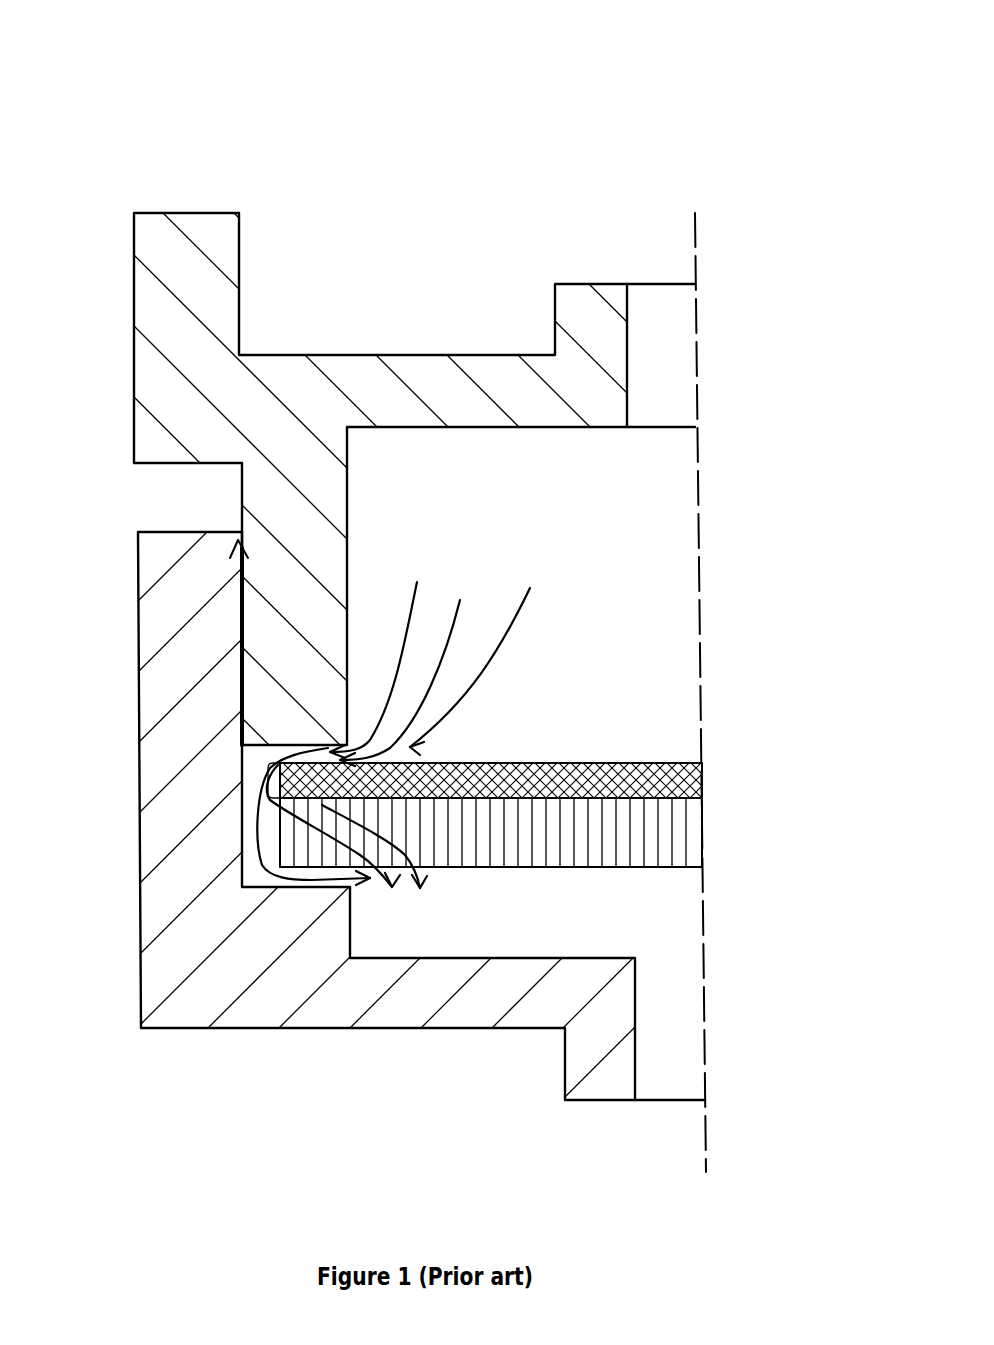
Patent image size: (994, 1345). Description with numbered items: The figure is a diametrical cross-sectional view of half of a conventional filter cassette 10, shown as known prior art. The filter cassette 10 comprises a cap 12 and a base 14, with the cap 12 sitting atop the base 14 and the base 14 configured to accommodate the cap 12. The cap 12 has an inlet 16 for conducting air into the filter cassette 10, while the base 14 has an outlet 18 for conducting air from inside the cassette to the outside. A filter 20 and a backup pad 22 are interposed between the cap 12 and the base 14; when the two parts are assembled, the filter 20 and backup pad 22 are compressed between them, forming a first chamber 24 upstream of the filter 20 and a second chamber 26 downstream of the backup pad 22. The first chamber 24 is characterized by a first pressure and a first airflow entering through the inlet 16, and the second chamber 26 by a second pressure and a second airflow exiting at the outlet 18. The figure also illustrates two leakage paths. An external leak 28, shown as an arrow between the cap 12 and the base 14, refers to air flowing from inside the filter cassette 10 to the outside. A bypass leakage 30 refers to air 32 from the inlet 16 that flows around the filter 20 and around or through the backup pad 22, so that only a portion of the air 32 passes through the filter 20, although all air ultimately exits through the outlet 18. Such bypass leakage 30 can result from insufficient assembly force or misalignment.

The filter cassette 10 is at (577, 173).
The cap 12 is at (302, 380).
The base 14 is at (273, 950).
The inlet 16 is at (658, 337).
The outlet 18 is at (690, 1057).
The filter 20 is at (690, 785).
The backup pad 22 is at (687, 853).
The first chamber 24 is at (643, 608).
The second chamber 26 is at (653, 893).
The external leak 28 is at (227, 523).
The bypass leakage 30 is at (263, 830).
The air 32 is at (462, 583).